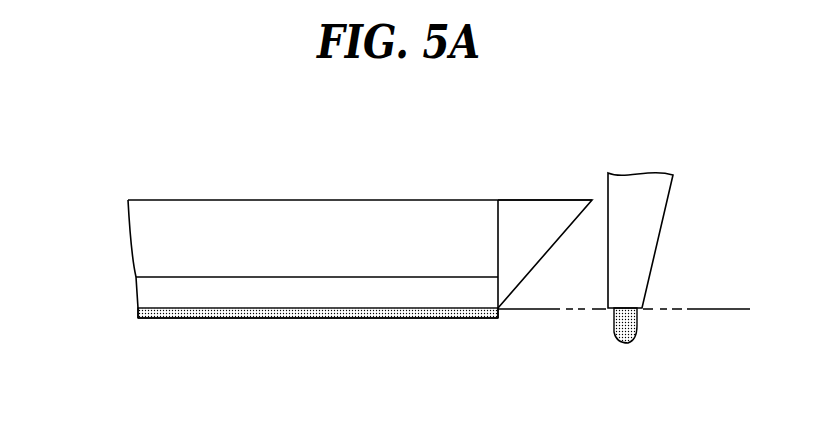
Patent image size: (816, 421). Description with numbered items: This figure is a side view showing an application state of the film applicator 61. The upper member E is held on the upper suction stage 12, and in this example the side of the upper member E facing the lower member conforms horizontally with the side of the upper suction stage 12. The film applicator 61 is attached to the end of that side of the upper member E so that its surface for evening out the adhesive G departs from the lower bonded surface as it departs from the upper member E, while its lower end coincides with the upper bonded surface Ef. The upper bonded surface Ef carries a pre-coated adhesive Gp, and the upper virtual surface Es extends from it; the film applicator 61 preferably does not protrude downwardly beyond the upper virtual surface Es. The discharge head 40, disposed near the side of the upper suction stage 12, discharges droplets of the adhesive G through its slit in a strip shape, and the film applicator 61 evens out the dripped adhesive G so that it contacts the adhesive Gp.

The upper suction stage 12 is at (278, 200).
The film applicator 61 is at (533, 200).
The discharge head 40 is at (662, 237).
The upper member E is at (135, 292).
The upper bonded surface Ef is at (390, 318).
The upper virtual surface Es is at (547, 310).
The adhesive Gp is at (303, 318).
The adhesive G is at (640, 337).